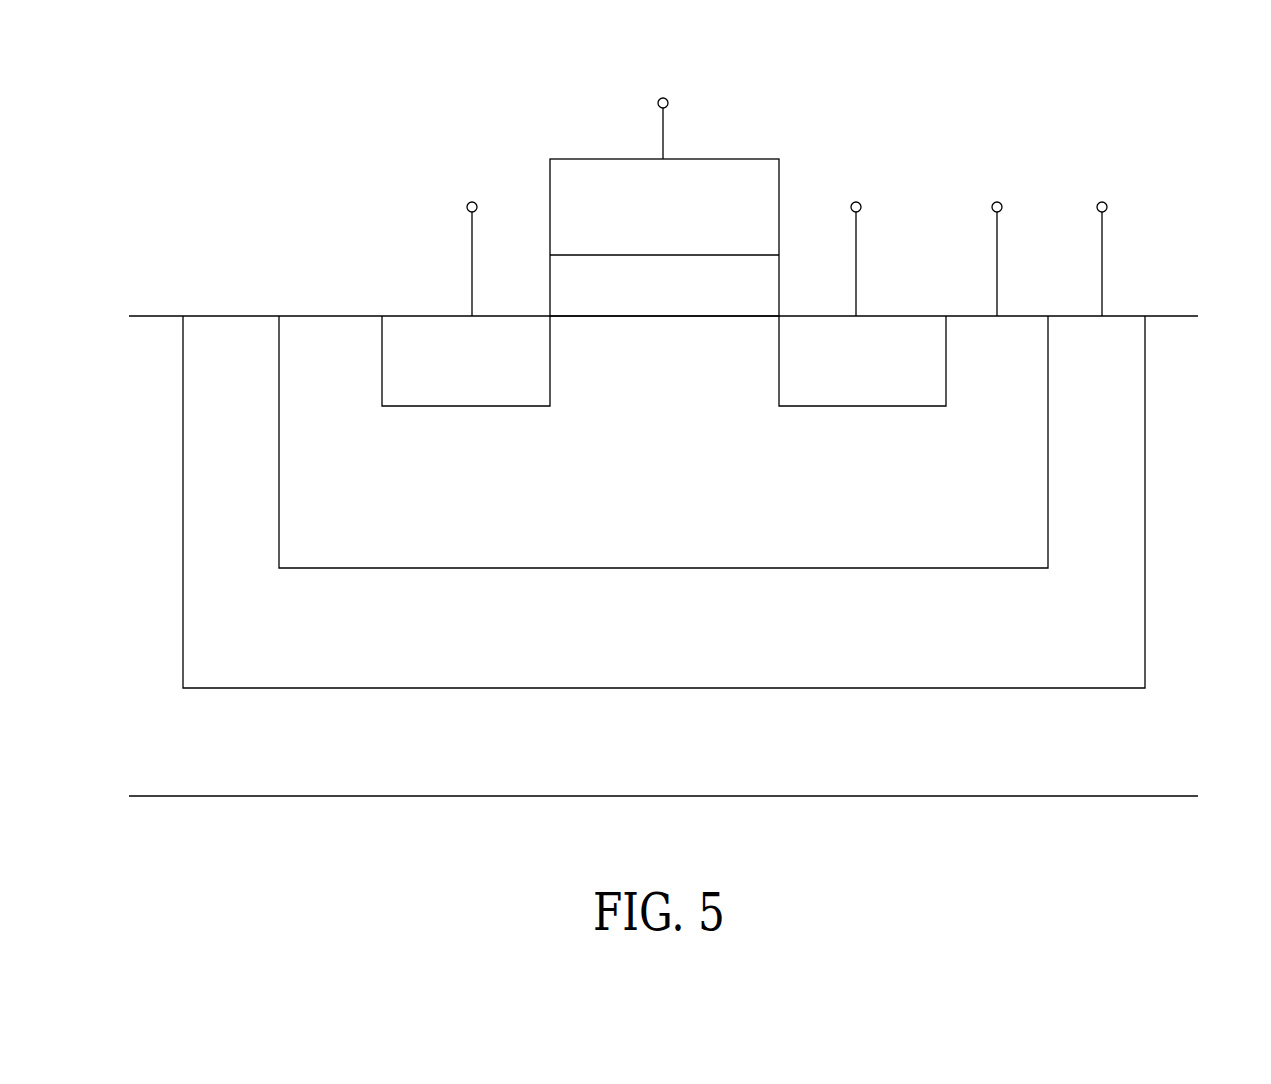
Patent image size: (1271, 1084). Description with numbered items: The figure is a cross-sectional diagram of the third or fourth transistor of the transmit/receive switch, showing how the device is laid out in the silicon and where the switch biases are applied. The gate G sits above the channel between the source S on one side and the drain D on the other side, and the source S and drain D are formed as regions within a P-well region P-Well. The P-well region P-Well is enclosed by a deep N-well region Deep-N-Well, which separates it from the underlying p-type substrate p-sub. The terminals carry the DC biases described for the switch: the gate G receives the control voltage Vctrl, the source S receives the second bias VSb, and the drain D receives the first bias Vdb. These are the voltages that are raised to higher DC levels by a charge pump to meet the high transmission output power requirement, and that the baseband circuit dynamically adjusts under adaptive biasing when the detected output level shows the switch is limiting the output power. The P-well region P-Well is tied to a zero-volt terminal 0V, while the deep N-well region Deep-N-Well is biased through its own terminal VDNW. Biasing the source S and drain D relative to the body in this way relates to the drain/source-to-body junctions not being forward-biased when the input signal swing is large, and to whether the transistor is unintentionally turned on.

The gate G is at (664, 237).
The source S is at (466, 361).
The drain D is at (862, 361).
The P-well P-Well is at (663, 442).
The deep N-well Deep-N-Well is at (664, 502).
The p-type substrate p-sub is at (663, 759).
The first control voltage Vctrl is at (663, 108).
The second bias VSb is at (472, 239).
The first bias Vdb is at (856, 239).
The ground terminal of P-well 0V is at (995, 239).
The deep N-well voltage terminal VDNW is at (1099, 239).